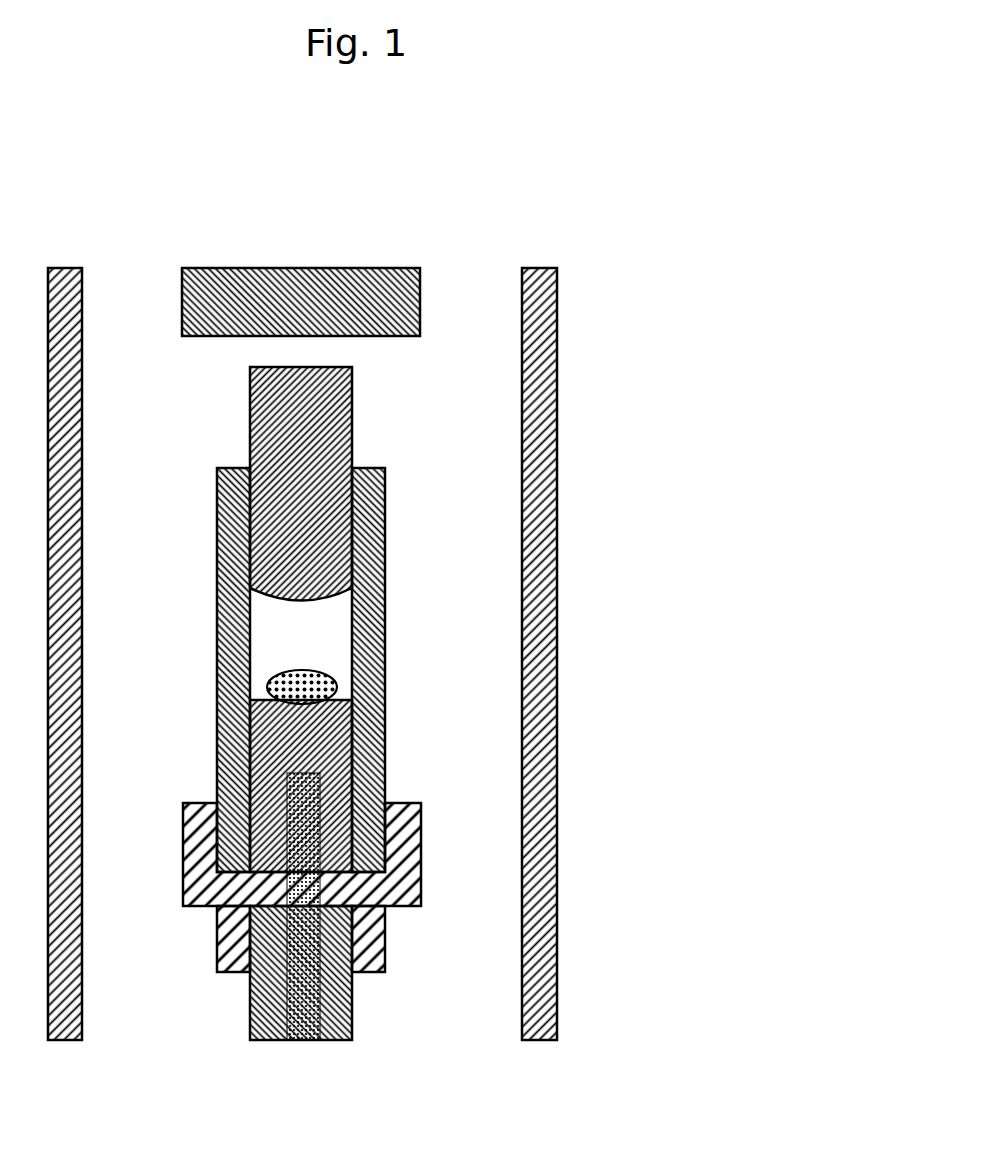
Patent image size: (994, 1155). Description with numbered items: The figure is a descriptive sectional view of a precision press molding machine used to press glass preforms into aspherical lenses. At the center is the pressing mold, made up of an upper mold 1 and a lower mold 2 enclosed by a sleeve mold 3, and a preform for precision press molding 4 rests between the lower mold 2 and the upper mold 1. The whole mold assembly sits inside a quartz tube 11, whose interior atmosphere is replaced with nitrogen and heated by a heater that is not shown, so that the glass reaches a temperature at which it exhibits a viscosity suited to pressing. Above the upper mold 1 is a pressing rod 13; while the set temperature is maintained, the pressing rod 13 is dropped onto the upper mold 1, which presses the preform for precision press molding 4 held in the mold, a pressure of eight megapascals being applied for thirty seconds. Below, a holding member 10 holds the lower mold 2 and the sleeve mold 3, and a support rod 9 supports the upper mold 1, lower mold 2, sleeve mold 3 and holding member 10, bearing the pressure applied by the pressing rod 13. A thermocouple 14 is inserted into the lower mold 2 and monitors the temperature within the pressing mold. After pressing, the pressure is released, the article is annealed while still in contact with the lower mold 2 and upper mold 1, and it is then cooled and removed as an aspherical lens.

The upper mold 1 is at (340, 433).
The lower mold 2 is at (348, 730).
The sleeve mold 3 is at (373, 533).
The preform for precision press molding 4 is at (337, 670).
The support rod 9 is at (337, 1007).
The holding member 10 is at (403, 840).
The quartz tube 11 is at (535, 300).
The pressing rod 13 is at (370, 300).
The thermocouple 14 is at (303, 940).